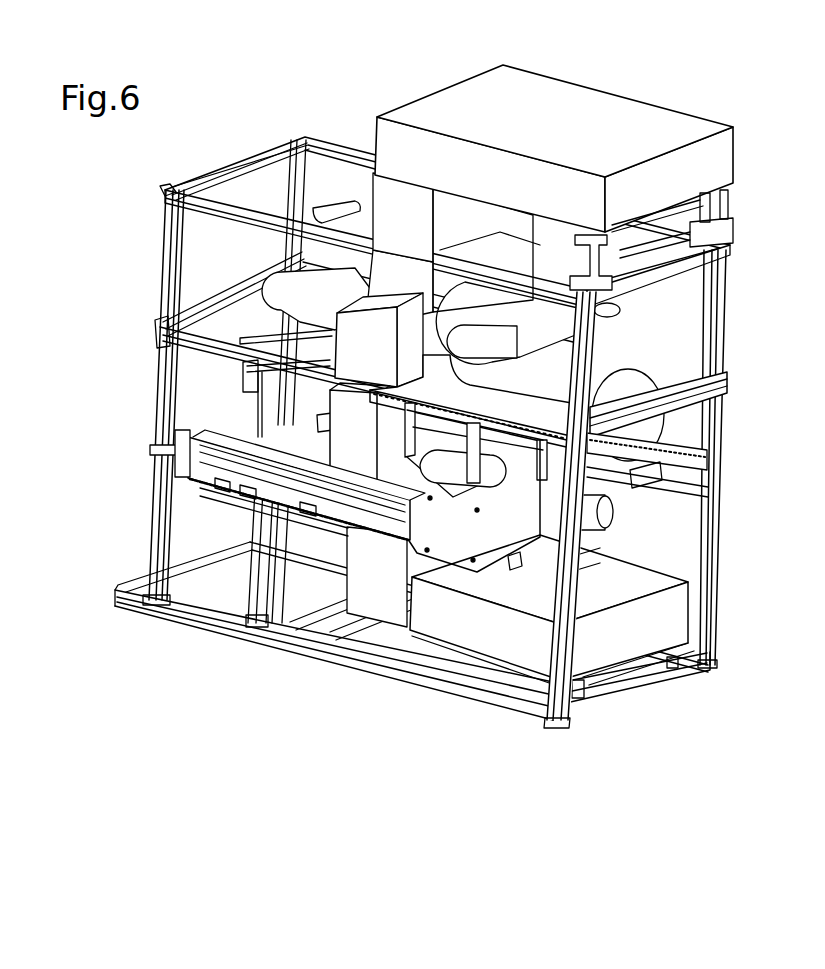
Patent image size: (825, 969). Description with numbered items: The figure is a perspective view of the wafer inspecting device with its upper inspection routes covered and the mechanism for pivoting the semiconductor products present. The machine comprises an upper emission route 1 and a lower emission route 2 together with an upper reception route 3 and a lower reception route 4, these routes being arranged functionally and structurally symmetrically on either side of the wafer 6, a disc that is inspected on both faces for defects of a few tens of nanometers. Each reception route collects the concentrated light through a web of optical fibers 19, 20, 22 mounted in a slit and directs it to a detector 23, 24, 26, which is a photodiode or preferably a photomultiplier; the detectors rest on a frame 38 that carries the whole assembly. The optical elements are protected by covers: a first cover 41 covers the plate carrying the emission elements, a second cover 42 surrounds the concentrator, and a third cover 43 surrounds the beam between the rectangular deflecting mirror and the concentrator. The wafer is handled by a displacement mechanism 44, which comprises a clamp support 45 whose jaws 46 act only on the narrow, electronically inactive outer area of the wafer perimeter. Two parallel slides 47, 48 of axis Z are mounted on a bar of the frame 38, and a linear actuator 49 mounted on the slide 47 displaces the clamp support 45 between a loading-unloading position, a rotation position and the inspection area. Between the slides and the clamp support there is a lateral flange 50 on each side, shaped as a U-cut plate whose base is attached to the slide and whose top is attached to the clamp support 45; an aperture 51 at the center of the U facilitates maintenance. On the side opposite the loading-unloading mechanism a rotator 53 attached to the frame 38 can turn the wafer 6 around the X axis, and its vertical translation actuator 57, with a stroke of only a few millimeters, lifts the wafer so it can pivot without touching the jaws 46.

The upper emission route 1 is at (624, 99).
The lower emission route 2 is at (454, 646).
The upper reception route 3 is at (620, 327).
The lower reception route 4 is at (633, 536).
The wafer 6 is at (532, 395).
The web of optical fibers 19 is at (292, 313).
The web of optical fibers 20 is at (520, 331).
The web of optical fibers 22 is at (648, 452).
The detector 23 is at (322, 205).
The detector 24 is at (614, 316).
The detector 26 is at (610, 517).
The frame 38 is at (723, 343).
The first cover 41 is at (498, 191).
The second cover 42 is at (387, 226).
The third cover 43 is at (354, 370).
The displacement mechanism 44 is at (307, 514).
The clamp support 45 is at (423, 327).
The jaws 46 is at (476, 374).
The slide 47 is at (513, 562).
The slide 48 is at (198, 430).
The linear actuator 49 is at (150, 446).
The lateral flange 50 is at (440, 543).
The aperture 51 is at (392, 492).
The rotator 53 is at (240, 348).
The vertical translation actuator 57 is at (318, 422).